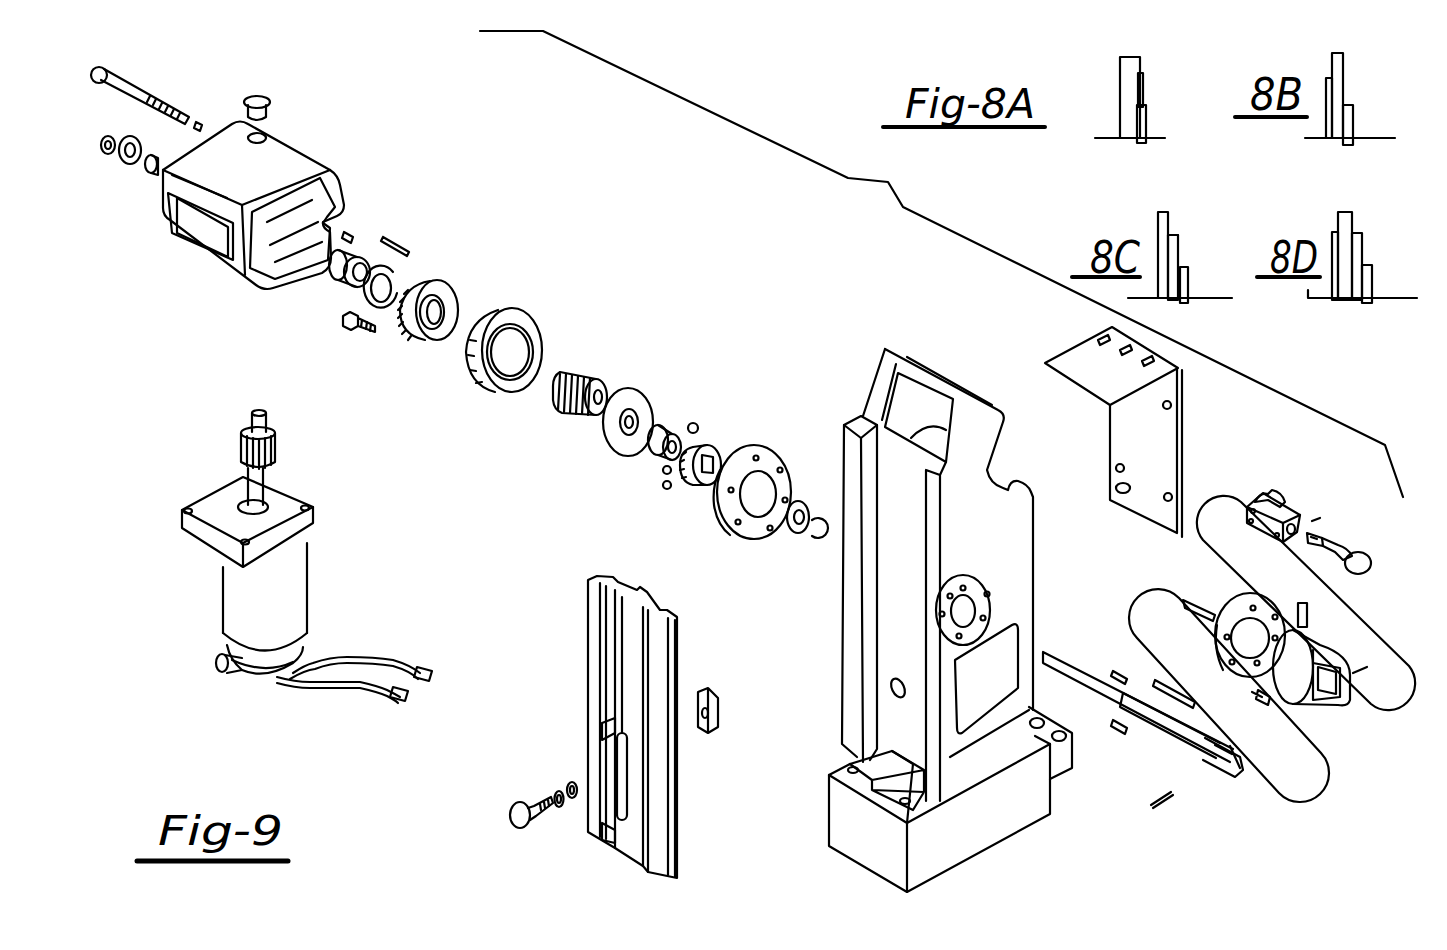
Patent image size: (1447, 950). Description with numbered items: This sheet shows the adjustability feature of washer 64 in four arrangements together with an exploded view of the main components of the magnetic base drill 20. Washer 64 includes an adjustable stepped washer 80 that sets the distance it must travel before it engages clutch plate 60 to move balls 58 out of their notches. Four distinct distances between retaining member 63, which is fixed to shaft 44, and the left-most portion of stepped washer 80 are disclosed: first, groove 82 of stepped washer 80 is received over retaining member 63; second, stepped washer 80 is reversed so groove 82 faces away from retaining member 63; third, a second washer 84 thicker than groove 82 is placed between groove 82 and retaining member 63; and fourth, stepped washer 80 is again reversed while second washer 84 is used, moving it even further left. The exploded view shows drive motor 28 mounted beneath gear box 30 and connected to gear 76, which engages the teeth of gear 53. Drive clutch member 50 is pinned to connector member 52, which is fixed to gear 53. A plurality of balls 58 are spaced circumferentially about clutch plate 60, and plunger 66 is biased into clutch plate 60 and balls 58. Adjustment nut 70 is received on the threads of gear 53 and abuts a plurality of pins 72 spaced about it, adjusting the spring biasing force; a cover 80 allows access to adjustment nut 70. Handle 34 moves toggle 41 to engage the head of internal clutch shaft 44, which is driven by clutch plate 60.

In FIG. 9, the magnetic base drill 20 is at (941, 264).
In FIG. 9, the drive motor 28 is at (343, 635).
In FIG. 9, the gear box 30 is at (226, 207).
In FIG. 9, the handle 34 is at (1347, 551).
In FIG. 9, the toggle 41 is at (1285, 500).
In FIG. 9, the internal clutch shaft 44 is at (1187, 740).
In FIG. 9, the drive clutch member 50 is at (727, 525).
In FIG. 9, the connector member 52 is at (510, 310).
In FIG. 9, the gear 53 is at (443, 282).
In FIG. 9, the balls 58 is at (662, 485).
In FIG. 9, the clutch plate 60 is at (723, 447).
In FIG. 8A, the retaining member 63 is at (1145, 117).
In FIG. 8B, the retaining member 63 is at (1355, 123).
In FIG. 8C, the retaining member 63 is at (1185, 267).
In FIG. 8D, the retaining member 63 is at (1370, 267).
In FIG. 8A, the washer 64 is at (1110, 90).
In FIG. 9, the plunger 66 is at (587, 373).
In FIG. 9, the adjustment nut 70 is at (357, 295).
In FIG. 9, the pins 72 is at (397, 237).
In FIG. 9, the gear 76 is at (237, 453).
In FIG. 8A, the stepped washer 80 is at (1132, 63).
In FIG. 8B, the stepped washer 80 is at (1342, 67).
In FIG. 8C, the stepped washer 80 is at (1165, 223).
In FIG. 8D, the stepped washer 80 is at (1345, 220).
In FIG. 9, the stepped washer 80 is at (207, 237).
In FIG. 8A, the groove 82 is at (1142, 90).
In FIG. 8B, the groove 82 is at (1327, 87).
In FIG. 8C, the groove 82 is at (1173, 223).
In FIG. 8D, the groove 82 is at (1335, 232).
In FIG. 8C, the second washer 84 is at (1177, 240).
In FIG. 8D, the second washer 84 is at (1357, 250).